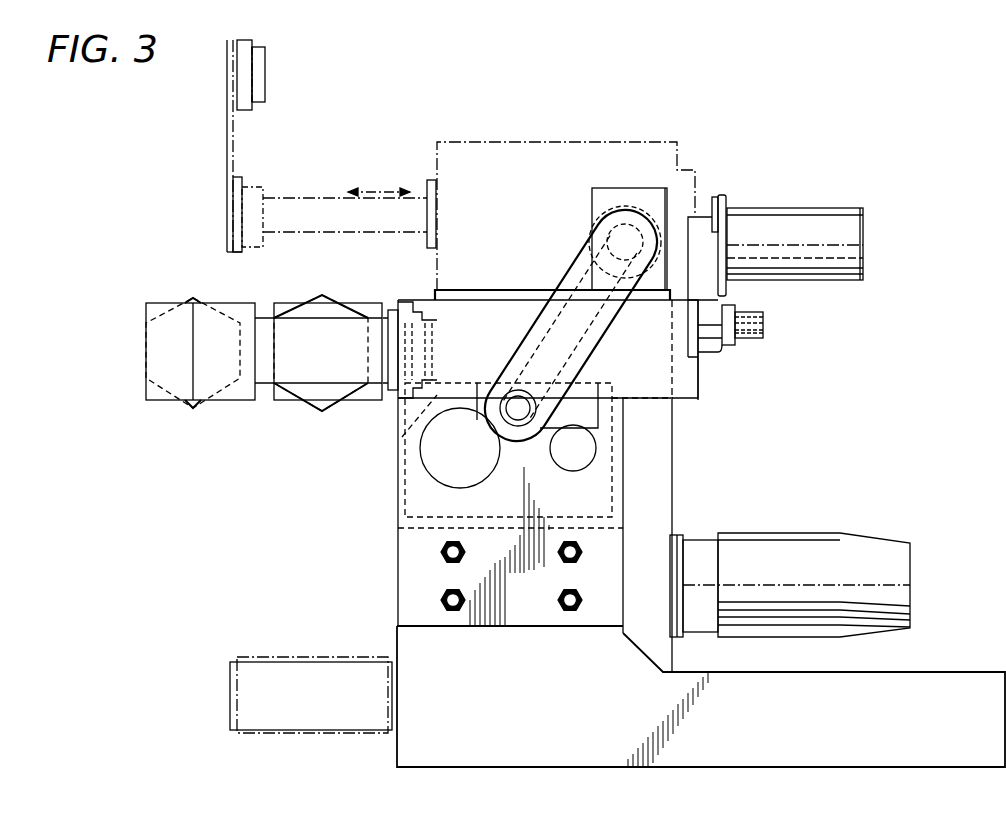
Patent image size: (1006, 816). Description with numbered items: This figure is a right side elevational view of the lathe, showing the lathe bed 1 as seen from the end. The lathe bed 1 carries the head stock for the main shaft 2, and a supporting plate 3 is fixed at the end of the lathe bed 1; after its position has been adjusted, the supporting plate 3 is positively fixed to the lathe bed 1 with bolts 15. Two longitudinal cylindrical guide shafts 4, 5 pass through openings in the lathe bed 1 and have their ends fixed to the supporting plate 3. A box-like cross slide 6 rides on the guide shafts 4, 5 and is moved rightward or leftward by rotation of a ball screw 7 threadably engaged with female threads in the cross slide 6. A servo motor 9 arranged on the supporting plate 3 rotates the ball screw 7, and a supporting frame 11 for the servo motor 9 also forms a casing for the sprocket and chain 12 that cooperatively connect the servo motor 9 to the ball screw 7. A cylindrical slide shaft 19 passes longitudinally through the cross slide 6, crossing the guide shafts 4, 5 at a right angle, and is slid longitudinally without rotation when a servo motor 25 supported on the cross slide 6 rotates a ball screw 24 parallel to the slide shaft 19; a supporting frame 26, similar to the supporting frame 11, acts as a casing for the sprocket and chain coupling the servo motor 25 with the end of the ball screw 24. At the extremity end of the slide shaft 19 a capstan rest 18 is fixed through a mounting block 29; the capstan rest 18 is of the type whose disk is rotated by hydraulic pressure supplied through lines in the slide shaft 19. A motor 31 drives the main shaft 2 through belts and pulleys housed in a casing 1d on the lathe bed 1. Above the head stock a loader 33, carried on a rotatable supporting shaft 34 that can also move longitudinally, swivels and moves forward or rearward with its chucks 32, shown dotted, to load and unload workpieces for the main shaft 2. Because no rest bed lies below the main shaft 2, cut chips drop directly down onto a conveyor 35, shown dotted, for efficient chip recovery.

The lathe bed 1 is at (525, 710).
The casing 1d is at (657, 462).
The main shaft 2 is at (417, 310).
The supporting plate 3 is at (410, 557).
The guide shaft 4 is at (477, 475).
The guide shaft 5 is at (573, 458).
The cross slide 6 is at (485, 350).
The ball screw 7 is at (523, 413).
The servo motor 9 is at (610, 203).
The supporting frame 11 is at (587, 320).
The sprocket and chain 12 is at (543, 312).
The bolt 15 is at (450, 607).
The capstan rest 18 is at (177, 308).
The slide shaft 19 is at (302, 373).
The ball screw 24 is at (757, 323).
The servo motor 25 is at (790, 220).
The supporting frame 26 is at (708, 275).
The mounting block 29 is at (177, 382).
The motor 31 is at (812, 543).
The chuck 32 is at (267, 60).
The loader 33 is at (447, 86).
The rotatable supporting shaft 34 is at (326, 198).
The conveyor 35 is at (275, 642).